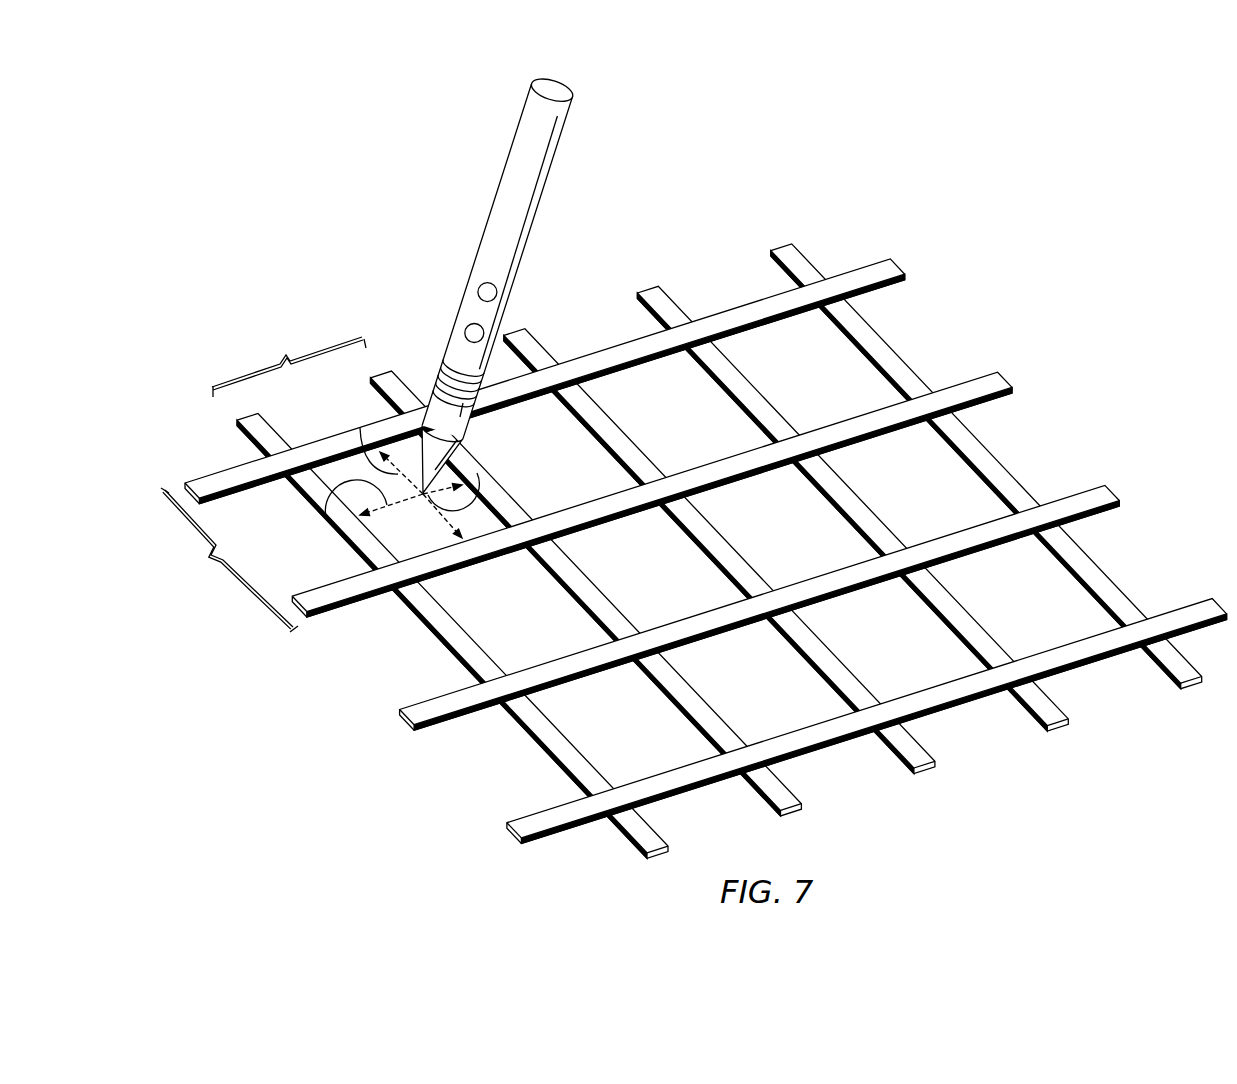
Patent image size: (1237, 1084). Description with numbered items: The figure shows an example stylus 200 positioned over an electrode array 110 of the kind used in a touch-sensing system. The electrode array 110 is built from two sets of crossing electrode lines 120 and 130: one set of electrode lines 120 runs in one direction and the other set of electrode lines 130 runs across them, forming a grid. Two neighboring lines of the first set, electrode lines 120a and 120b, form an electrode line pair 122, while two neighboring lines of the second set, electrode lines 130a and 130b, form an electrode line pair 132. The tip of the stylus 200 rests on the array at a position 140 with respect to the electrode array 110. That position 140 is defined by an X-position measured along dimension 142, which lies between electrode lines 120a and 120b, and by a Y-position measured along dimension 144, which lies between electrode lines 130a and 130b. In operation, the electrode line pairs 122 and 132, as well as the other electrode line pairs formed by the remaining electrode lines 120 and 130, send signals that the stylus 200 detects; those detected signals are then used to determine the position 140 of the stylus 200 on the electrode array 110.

The electrode array 110 is at (692, 529).
The electrode lines 120 is at (525, 342).
The electrode line 120a is at (252, 424).
The electrode line 120b is at (383, 380).
The electrode line pair 122 is at (289, 364).
The electrode lines 130 is at (420, 710).
The electrode line 130a is at (205, 482).
The electrode line 130b is at (312, 597).
The electrode line pair 132 is at (229, 560).
The position 140 is at (477, 473).
The dimension 142 is at (326, 517).
The dimension 144 is at (360, 428).
The stylus 200 is at (487, 220).